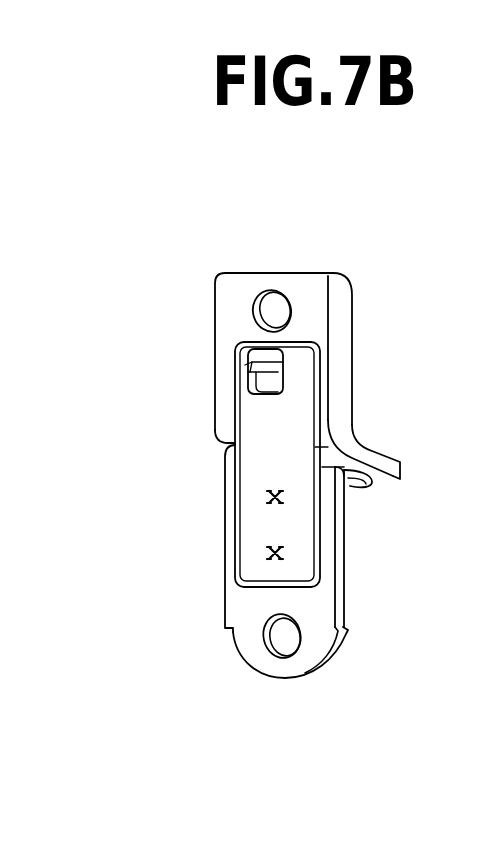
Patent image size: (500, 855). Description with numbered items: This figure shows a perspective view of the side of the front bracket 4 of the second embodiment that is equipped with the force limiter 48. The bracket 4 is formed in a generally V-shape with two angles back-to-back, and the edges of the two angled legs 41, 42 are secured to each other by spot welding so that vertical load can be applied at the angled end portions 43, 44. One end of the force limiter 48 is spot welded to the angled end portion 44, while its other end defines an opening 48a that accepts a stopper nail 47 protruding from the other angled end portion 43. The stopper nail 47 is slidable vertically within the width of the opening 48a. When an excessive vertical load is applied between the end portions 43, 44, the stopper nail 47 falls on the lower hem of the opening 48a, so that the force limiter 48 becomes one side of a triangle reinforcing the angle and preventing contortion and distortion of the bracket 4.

The bracket 4 is at (372, 275).
The leg 41 is at (373, 450).
The leg 42 is at (358, 480).
The end portion 43 is at (289, 278).
The end portion 44 is at (327, 668).
The stopper nail 47 is at (248, 367).
The force limiter 48 is at (256, 450).
The opening 48a is at (263, 393).